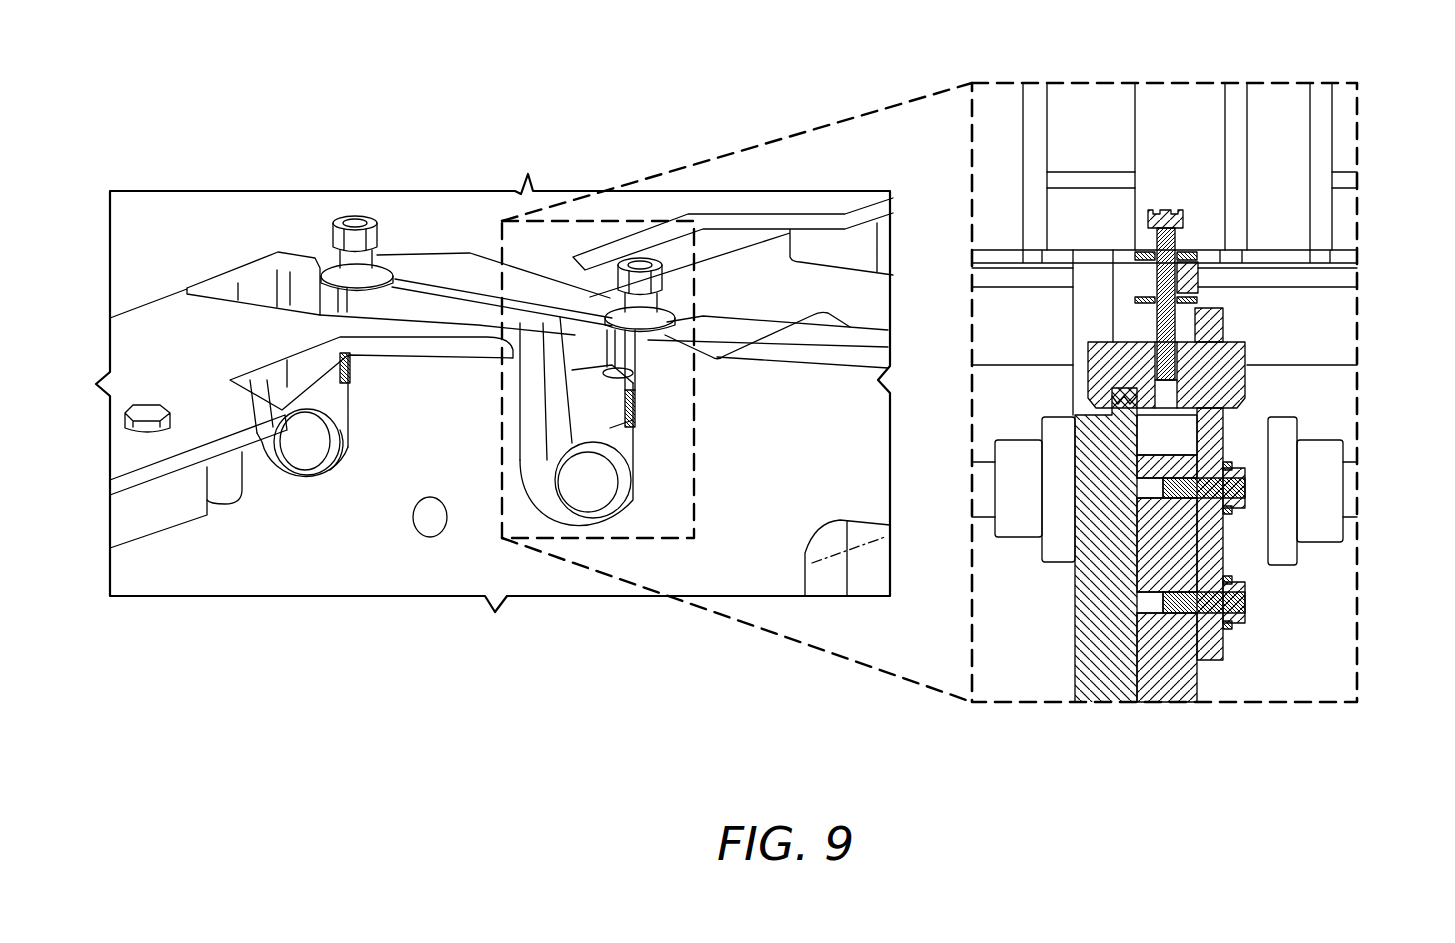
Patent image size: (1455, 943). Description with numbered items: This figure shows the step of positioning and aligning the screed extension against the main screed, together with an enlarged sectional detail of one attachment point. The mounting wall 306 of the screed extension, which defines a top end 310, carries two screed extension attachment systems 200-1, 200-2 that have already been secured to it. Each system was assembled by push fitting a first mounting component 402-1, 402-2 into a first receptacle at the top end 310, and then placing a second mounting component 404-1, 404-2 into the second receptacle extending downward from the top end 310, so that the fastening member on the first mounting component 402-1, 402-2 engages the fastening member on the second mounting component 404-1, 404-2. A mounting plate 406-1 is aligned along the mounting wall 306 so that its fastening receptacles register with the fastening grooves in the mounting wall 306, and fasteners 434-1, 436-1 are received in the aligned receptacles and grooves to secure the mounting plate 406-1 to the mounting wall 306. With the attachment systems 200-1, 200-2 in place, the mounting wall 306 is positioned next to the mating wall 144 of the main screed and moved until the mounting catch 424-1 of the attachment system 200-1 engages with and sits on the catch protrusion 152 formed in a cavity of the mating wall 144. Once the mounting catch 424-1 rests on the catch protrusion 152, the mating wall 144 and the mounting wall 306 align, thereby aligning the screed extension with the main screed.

The mating wall 144 is at (436, 308).
The catch protrusion 152 is at (1103, 408).
The screed extension attachment system 200-1 is at (951, 219).
The screed extension attachment system 200-2 is at (414, 177).
The mounting wall 306 is at (533, 300).
The top end 310 is at (482, 280).
The first mounting component 402-1 is at (634, 244).
The first mounting component 402-2 is at (351, 207).
The second mounting component 404-1 is at (583, 492).
The second mounting component 404-2 is at (297, 448).
The mounting plate 406-1 is at (1215, 432).
The mounting catch 424-1 is at (1125, 388).
The fastener 434-1 is at (1244, 484).
The fastener 436-1 is at (1246, 598).